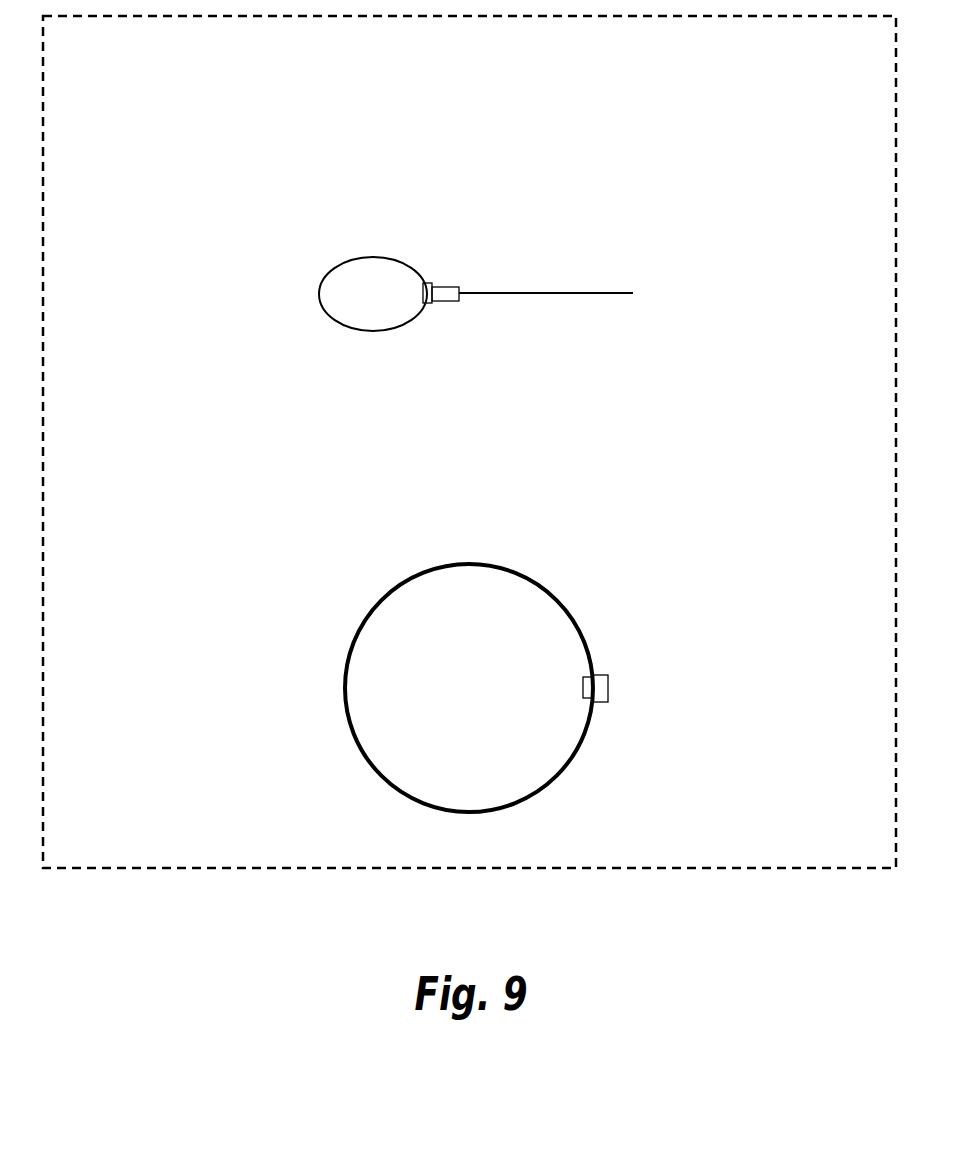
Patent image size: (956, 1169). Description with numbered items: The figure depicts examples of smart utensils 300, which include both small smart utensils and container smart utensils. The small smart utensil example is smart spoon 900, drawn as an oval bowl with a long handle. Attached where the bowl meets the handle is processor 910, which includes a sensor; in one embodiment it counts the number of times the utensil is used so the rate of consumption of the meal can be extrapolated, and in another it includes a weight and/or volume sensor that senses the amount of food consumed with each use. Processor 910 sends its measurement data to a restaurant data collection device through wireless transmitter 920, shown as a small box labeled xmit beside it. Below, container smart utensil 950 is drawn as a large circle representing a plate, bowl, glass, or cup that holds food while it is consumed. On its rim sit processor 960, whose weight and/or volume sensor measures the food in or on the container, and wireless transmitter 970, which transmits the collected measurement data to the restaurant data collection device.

The smart utensils 300 is at (455, 90).
The smart spoon 900 is at (371, 252).
The processor 910 is at (528, 247).
The wireless transmitter 920 is at (566, 329).
The container smart utensil 950 is at (353, 648).
The processor 960 is at (690, 633).
The wireless transmitter 970 is at (731, 673).